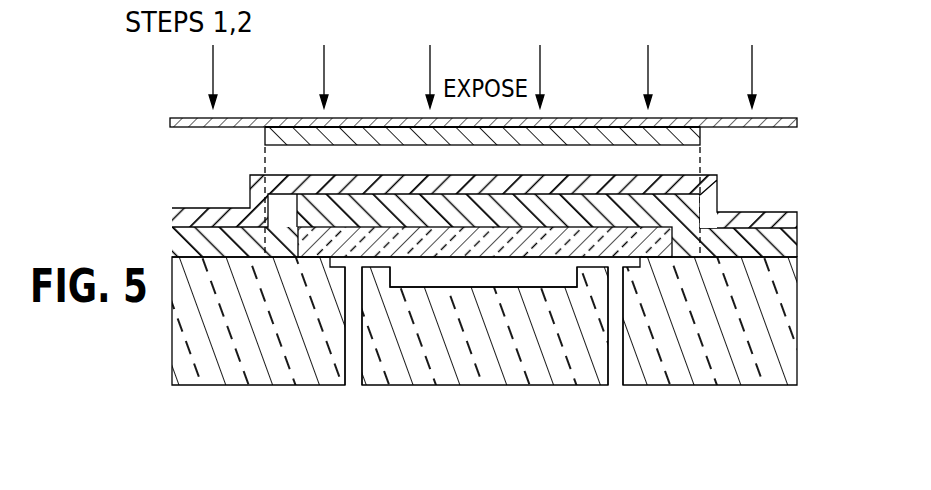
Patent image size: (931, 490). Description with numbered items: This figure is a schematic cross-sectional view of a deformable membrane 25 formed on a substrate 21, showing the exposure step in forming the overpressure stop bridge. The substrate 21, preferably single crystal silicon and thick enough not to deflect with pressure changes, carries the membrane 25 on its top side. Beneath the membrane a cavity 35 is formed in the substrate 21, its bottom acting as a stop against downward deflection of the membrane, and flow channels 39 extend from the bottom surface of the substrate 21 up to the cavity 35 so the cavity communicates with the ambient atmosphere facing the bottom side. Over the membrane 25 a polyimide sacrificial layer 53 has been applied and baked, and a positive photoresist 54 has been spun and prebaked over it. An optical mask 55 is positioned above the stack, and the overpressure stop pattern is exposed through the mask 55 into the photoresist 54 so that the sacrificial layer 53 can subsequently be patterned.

The substrate 21 is at (798, 313).
The deformable membrane 25 is at (622, 230).
The cavity 35 is at (485, 277).
The flow channels 39 is at (353, 377).
The sacrificial layer 53 is at (349, 198).
The positive photoresist 54 is at (763, 212).
The optical mask 55 is at (606, 117).